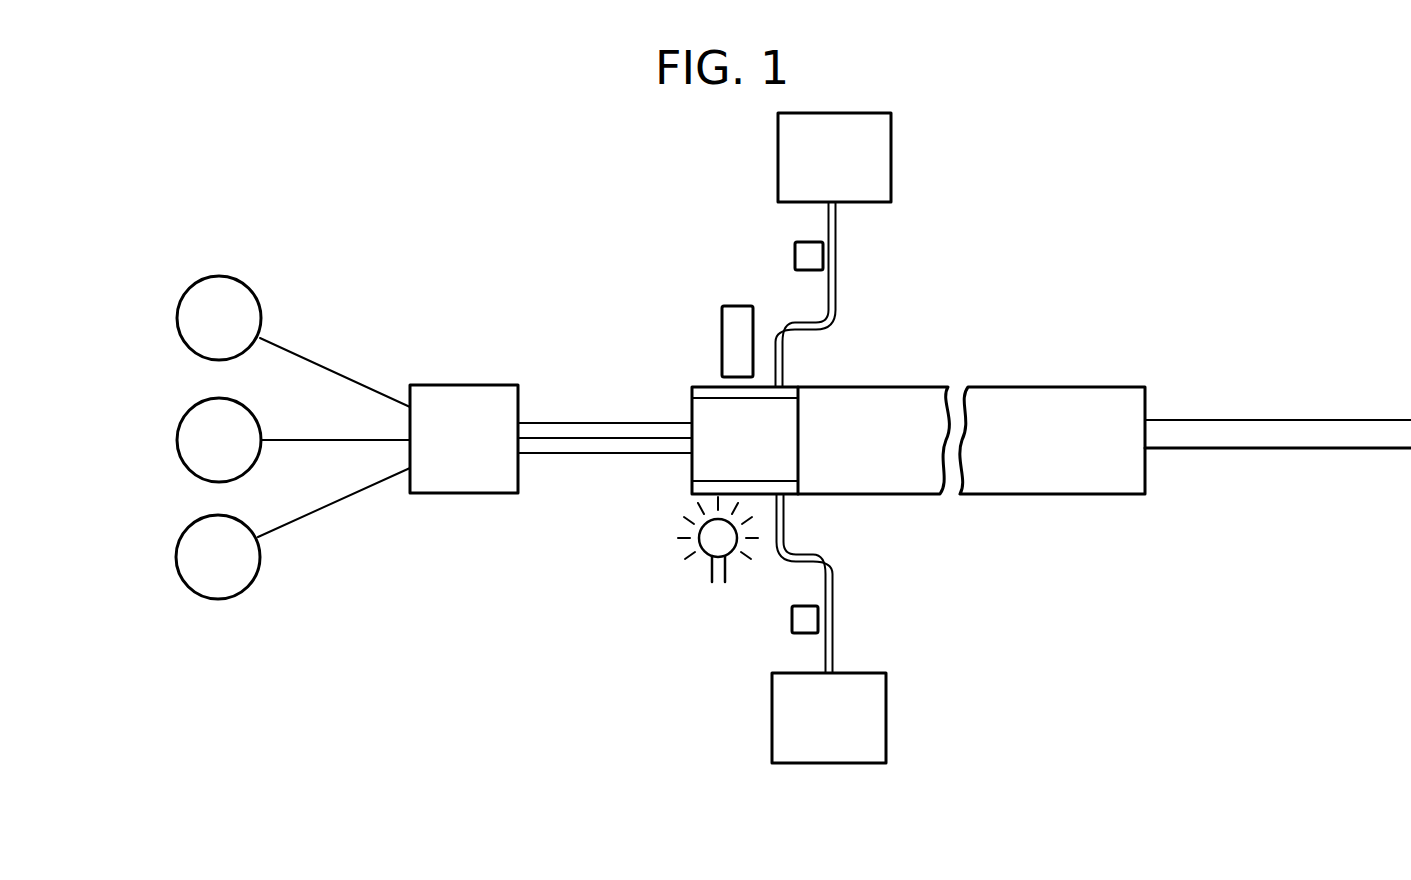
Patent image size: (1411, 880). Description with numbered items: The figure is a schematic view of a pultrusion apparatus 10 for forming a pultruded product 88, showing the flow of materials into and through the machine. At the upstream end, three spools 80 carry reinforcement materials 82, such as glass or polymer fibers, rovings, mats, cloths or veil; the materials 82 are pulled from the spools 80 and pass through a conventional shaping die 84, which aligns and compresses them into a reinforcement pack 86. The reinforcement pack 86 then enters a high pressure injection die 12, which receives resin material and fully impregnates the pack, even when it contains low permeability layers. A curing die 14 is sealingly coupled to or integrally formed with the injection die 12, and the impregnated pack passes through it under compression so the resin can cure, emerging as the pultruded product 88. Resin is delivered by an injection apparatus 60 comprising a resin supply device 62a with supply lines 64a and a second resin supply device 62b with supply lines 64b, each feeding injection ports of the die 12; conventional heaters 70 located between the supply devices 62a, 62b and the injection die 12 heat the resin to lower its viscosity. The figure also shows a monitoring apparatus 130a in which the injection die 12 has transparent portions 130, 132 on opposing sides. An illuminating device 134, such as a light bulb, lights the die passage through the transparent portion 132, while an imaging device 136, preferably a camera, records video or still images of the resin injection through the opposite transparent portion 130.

The apparatus 10 is at (992, 288).
The high pressure injection die 12 is at (759, 452).
The curing die 14 is at (874, 452).
The injection apparatus 60 is at (879, 416).
The resin supply device 62a is at (885, 137).
The resin supply device 62b is at (886, 718).
The supply lines 64a is at (838, 275).
The supply lines 64b is at (833, 620).
The heaters 70 is at (805, 255).
The spools 80 is at (190, 342).
The reinforcement materials 82 is at (330, 437).
The shaping die 84 is at (478, 452).
The reinforcement pack 86 is at (567, 422).
The pultruded product 88 is at (1285, 430).
The transparent portion 130 is at (700, 384).
The monitoring apparatus 130a is at (638, 566).
The transparent portion 132 is at (696, 494).
The illuminating device 134 is at (712, 567).
The imaging device 136 is at (735, 308).